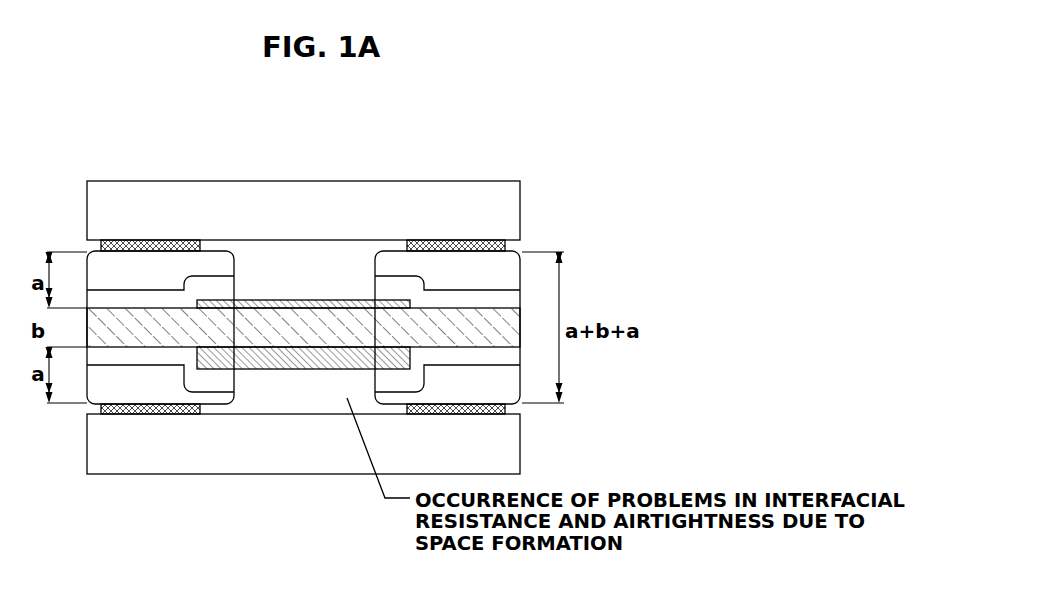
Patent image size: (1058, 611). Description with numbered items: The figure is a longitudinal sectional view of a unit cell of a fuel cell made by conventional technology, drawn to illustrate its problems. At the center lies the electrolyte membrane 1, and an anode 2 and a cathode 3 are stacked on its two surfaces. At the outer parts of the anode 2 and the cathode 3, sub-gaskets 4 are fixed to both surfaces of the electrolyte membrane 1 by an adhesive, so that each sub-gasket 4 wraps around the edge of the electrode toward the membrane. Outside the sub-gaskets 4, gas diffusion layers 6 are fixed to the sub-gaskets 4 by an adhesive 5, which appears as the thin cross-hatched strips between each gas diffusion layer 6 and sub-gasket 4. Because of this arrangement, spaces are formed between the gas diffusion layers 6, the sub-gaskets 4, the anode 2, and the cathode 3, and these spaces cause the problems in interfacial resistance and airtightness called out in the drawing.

The electrolyte membrane 1 is at (135, 318).
The anode 2 is at (262, 300).
The cathode 3 is at (257, 362).
The sub-gasket 4 is at (459, 270).
The adhesive 5 is at (496, 250).
The gas diffusion layer 6 is at (395, 193).